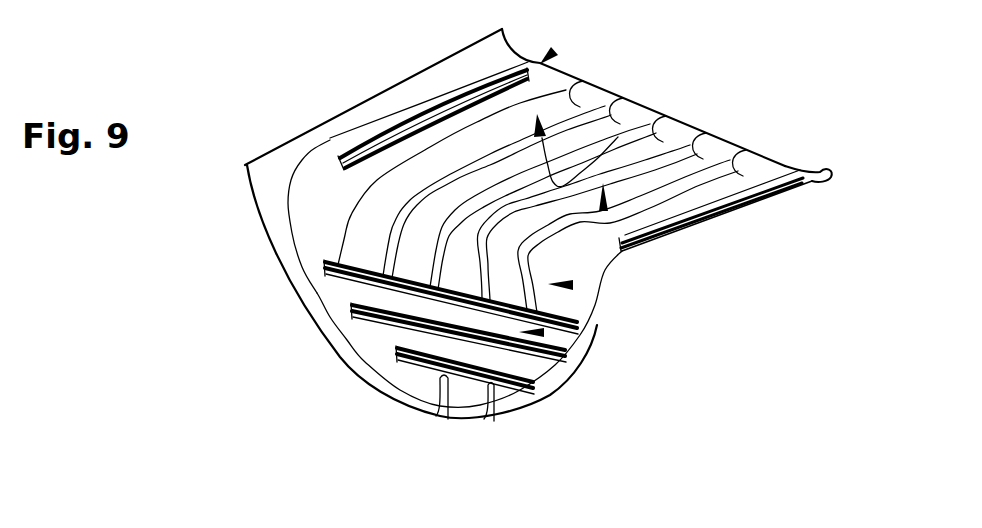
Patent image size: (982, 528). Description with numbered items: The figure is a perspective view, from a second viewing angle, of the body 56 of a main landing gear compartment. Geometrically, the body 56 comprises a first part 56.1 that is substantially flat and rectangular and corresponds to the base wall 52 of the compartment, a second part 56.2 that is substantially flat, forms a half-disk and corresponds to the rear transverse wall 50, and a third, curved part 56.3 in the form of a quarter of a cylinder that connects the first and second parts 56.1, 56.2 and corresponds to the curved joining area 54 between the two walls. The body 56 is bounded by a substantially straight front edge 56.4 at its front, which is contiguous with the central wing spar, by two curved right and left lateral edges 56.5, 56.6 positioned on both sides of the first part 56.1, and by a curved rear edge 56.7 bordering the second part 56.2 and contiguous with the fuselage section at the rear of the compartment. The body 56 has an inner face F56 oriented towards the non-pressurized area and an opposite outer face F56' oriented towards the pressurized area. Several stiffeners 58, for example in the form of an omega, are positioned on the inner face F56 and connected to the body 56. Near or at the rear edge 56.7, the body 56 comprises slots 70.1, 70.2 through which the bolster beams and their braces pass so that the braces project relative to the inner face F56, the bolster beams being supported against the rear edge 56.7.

The rear transverse wall 50 is at (545, 333).
The base wall 52 is at (604, 213).
The curved joining area 54 is at (575, 285).
The body 56 is at (283, 228).
The first part 56.1 is at (652, 180).
The second part 56.2 is at (419, 305).
The third, curved part 56.3 is at (422, 270).
The front edge 56.4 is at (712, 141).
The right lateral edge 56.5 is at (823, 168).
The left lateral edge 56.6 is at (397, 85).
The rear edge 56.7 is at (312, 292).
The stiffener 58 is at (387, 143).
The slot 70.1 is at (450, 414).
The slot 70.2 is at (494, 412).
The inner face F56 is at (627, 135).
The outer face F56' is at (591, 42).